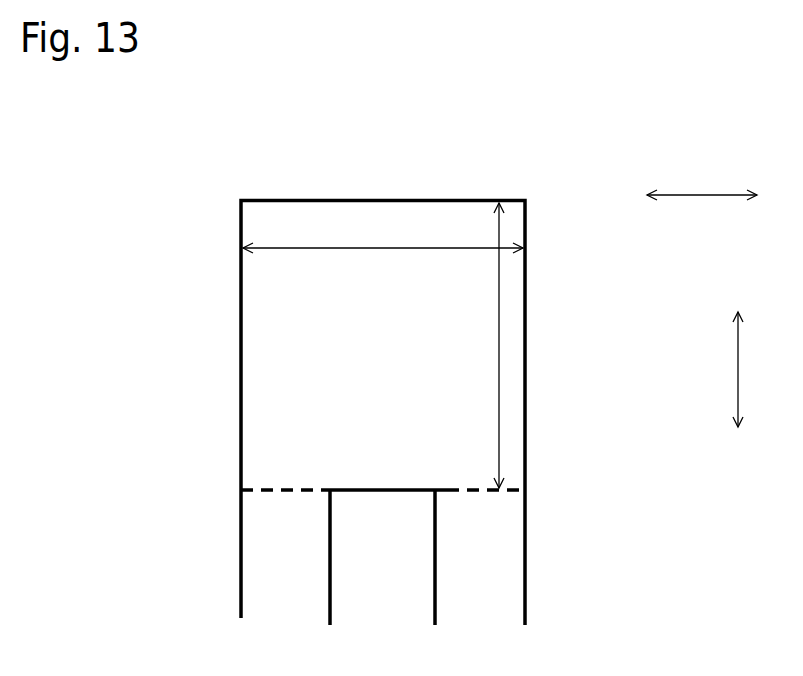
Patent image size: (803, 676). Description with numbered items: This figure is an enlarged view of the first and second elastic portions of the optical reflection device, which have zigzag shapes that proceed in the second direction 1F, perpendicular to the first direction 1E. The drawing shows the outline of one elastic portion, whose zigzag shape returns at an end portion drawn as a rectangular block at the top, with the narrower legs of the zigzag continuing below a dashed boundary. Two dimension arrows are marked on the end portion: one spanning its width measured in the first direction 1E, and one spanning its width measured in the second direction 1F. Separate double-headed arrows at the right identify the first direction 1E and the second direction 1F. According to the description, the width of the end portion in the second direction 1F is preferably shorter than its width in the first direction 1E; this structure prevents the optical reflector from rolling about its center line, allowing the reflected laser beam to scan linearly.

The first direction 1E is at (687, 195).
The second direction 1F is at (740, 357).